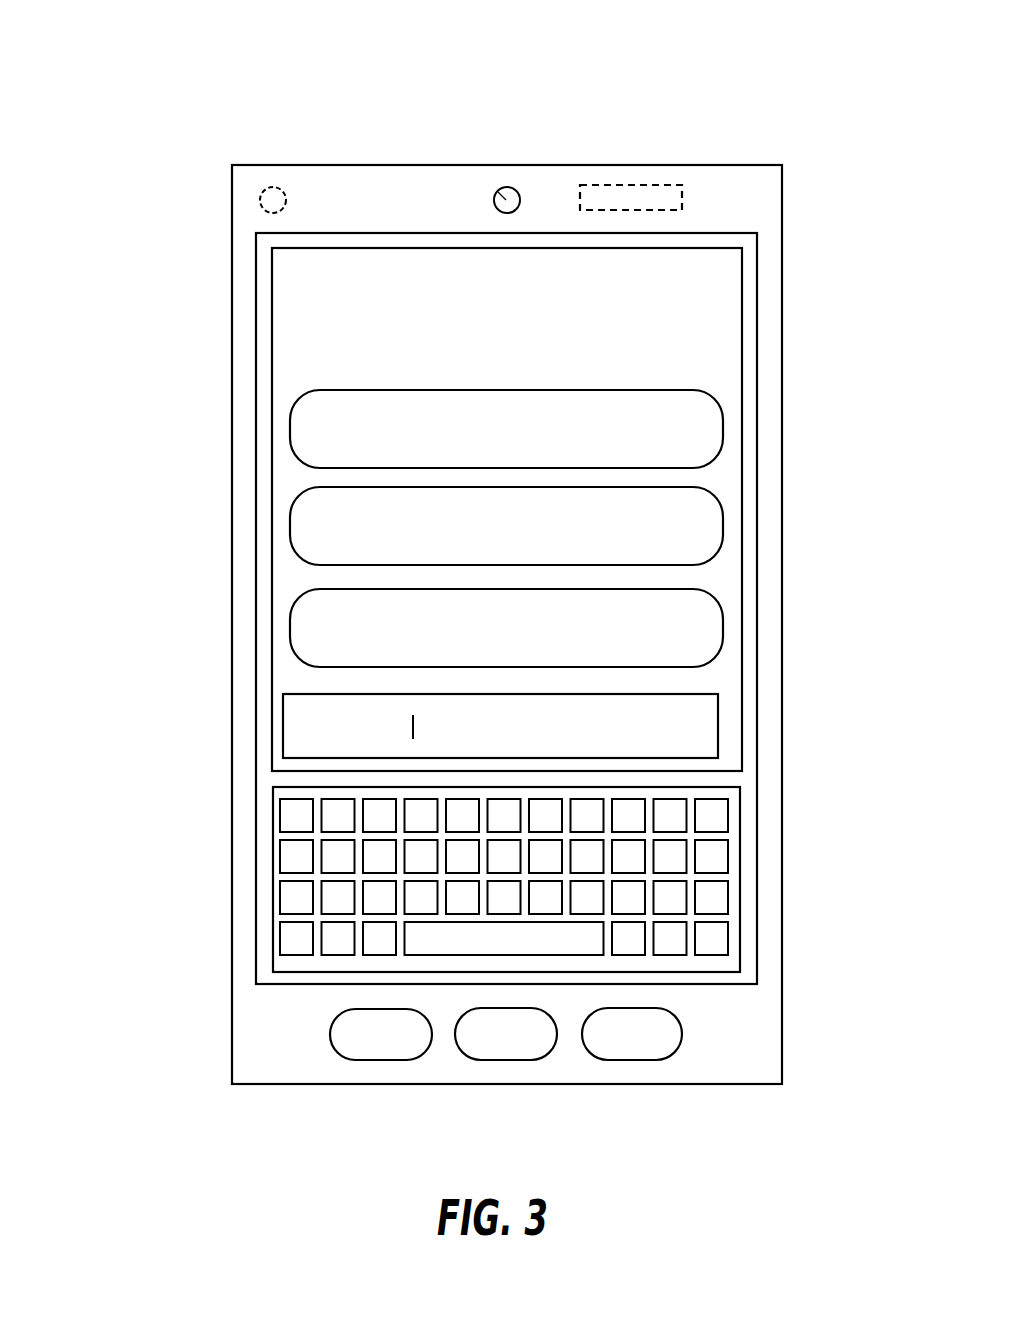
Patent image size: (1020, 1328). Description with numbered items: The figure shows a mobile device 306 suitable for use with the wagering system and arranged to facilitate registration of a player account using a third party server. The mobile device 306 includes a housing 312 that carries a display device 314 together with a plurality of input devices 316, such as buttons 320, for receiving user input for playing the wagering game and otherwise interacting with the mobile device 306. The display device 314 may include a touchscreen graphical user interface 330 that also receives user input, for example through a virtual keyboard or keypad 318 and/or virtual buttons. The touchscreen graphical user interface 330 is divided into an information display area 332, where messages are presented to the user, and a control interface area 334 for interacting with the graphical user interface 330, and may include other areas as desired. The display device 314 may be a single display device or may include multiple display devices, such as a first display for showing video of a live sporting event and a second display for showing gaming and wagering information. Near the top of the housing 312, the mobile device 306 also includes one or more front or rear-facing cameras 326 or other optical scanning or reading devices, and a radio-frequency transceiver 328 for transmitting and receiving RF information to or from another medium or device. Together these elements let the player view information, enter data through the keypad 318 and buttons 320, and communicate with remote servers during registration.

The mobile device 306 is at (122, 47).
The housing 312 is at (237, 230).
The display device 314 is at (267, 518).
The input devices 316 is at (662, 1045).
The virtual keyboard or keypad 318 is at (757, 883).
The buttons 320 is at (505, 1060).
The cameras 326 is at (498, 192).
The radio-frequency transceiver 328 is at (627, 193).
The touchscreen graphical user interface 330 is at (282, 467).
The information display area 332 is at (703, 313).
The control interface area 334 is at (725, 793).